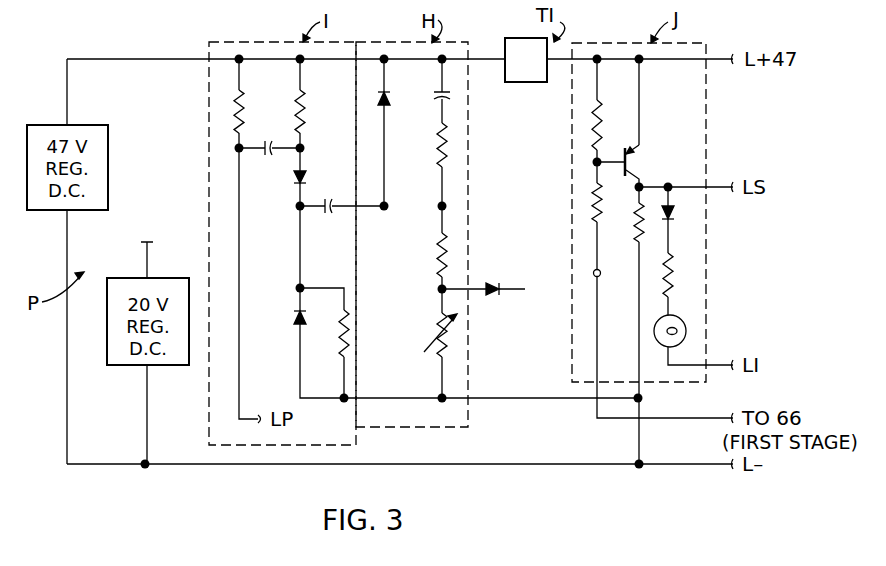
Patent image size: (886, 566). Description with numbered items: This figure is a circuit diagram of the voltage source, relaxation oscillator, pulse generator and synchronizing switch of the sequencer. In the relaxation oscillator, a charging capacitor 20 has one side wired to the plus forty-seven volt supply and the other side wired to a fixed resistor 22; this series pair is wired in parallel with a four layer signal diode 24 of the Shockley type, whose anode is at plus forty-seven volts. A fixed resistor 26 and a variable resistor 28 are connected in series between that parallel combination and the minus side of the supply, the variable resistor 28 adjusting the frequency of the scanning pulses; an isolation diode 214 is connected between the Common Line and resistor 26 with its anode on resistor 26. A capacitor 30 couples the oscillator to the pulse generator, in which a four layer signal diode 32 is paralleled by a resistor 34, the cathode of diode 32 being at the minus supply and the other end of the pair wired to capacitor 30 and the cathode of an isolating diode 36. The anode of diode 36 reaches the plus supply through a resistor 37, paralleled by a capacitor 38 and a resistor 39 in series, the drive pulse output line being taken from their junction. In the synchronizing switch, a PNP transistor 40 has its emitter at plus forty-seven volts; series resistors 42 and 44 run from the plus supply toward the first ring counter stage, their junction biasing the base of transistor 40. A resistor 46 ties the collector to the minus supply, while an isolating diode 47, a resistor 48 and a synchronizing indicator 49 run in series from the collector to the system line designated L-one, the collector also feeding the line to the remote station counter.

The capacitor 20 is at (434, 90).
The fixed resistor 22 is at (437, 152).
The four layer signal diode 24 is at (389, 100).
The fixed resistor 26 is at (437, 260).
The variable resistor 28 is at (431, 349).
The capacitor 30 is at (328, 215).
The four layer signal diode 32 is at (302, 322).
The resistor 34 is at (349, 334).
The isolating diode 36 is at (306, 178).
The resistor 37 is at (305, 118).
The capacitor 38 is at (268, 157).
The resistor 39 is at (244, 113).
The PNP transistor 40 is at (630, 166).
The resistor 42 is at (602, 110).
The resistor 44 is at (600, 218).
The resistor 46 is at (636, 238).
The isolating diode 47 is at (672, 228).
The resistor 48 is at (673, 280).
The synchronizing indicator 49 is at (686, 331).
The isolation diode 214 is at (495, 282).